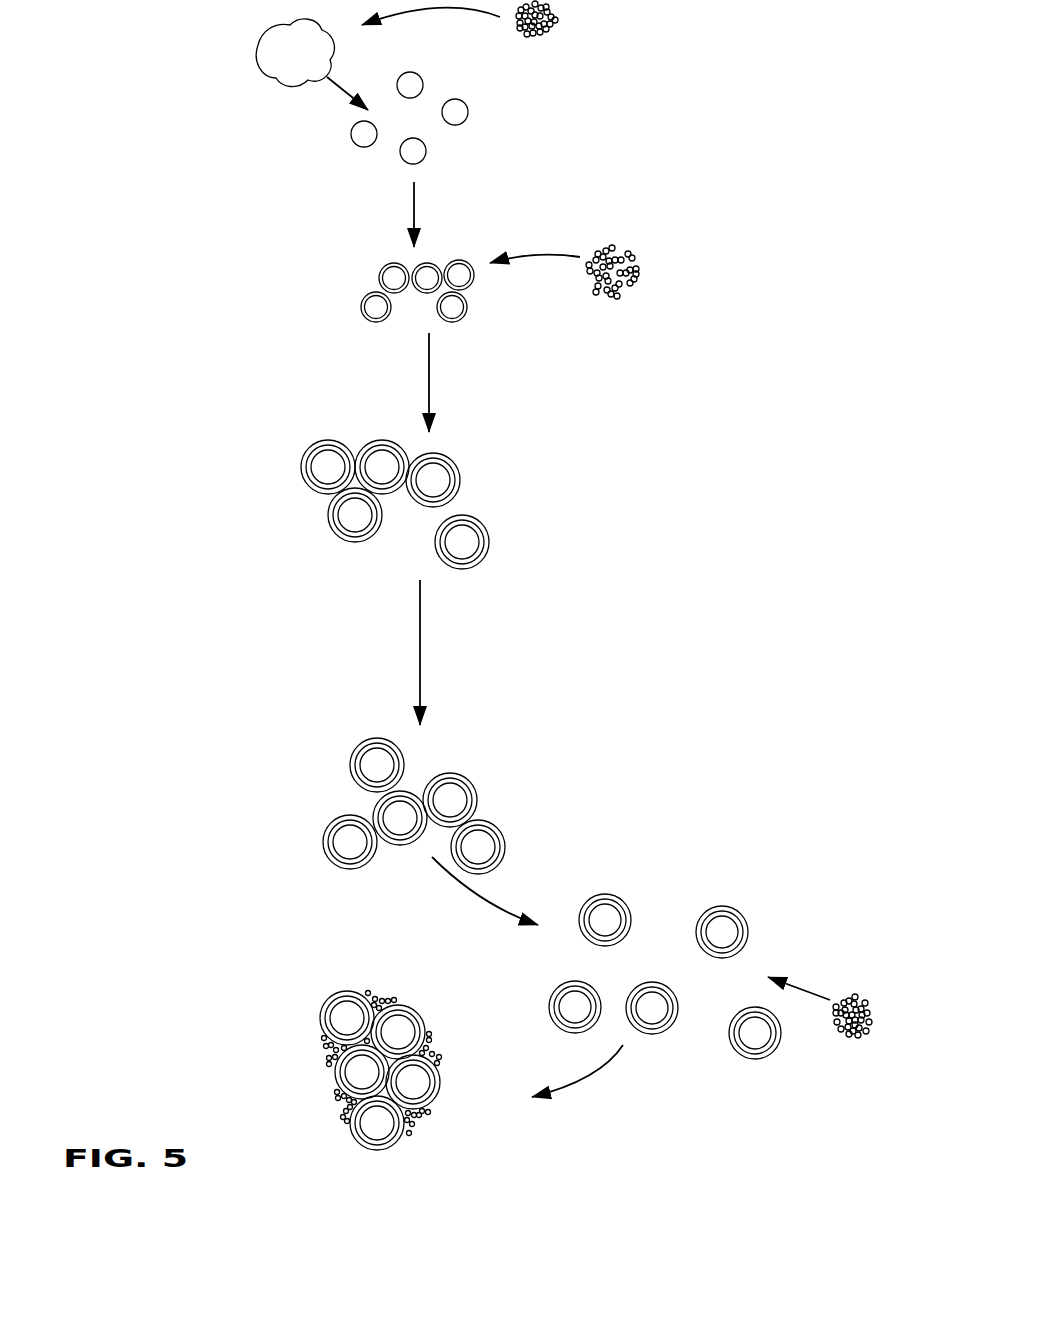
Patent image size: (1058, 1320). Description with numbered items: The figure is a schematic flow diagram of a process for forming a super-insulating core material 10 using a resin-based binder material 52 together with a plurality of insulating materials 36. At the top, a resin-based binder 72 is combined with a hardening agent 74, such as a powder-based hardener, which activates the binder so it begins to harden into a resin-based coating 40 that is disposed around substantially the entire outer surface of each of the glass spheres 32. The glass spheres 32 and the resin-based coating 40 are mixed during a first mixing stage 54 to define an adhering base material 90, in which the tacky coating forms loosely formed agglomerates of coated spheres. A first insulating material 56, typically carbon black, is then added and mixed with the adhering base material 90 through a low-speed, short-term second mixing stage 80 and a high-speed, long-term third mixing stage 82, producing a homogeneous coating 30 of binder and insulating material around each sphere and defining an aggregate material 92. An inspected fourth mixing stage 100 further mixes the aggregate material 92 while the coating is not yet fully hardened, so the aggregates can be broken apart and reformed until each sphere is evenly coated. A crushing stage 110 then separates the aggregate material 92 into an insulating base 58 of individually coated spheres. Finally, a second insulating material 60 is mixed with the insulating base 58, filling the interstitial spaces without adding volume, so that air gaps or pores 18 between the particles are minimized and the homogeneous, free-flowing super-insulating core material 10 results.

The super-insulating core material 10 is at (322, 1105).
The pores 18 is at (423, 1113).
The homogeneous coating 30 is at (338, 733).
The glass spheres 32 is at (468, 105).
The insulating materials 36 is at (625, 240).
The resin-based coating 40 is at (467, 313).
The binder material 52 is at (327, 113).
The first mixing stage 54 is at (410, 203).
The first insulating material 56 is at (625, 285).
The insulating base 58 is at (318, 530).
The second insulating material 60 is at (870, 1000).
The resin-based binder 72 is at (258, 50).
The hardening agent 74 is at (558, 20).
The second mixing stage 80 is at (425, 371).
The third mixing stage 82 is at (435, 392).
The adhering base material 90 is at (350, 300).
The aggregate material 92 is at (318, 790).
The fourth mixing stage 100 is at (420, 645).
The crushing stage 110 is at (473, 895).